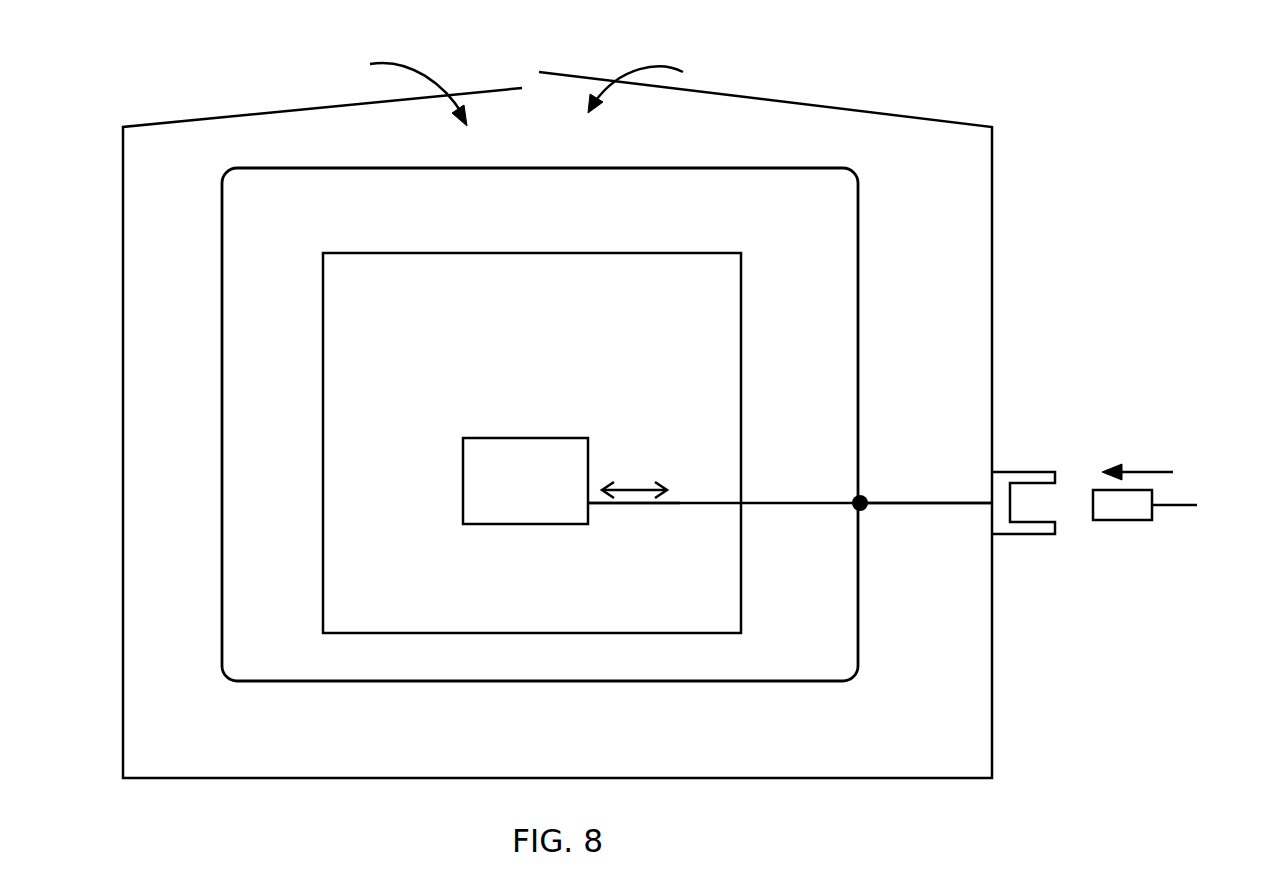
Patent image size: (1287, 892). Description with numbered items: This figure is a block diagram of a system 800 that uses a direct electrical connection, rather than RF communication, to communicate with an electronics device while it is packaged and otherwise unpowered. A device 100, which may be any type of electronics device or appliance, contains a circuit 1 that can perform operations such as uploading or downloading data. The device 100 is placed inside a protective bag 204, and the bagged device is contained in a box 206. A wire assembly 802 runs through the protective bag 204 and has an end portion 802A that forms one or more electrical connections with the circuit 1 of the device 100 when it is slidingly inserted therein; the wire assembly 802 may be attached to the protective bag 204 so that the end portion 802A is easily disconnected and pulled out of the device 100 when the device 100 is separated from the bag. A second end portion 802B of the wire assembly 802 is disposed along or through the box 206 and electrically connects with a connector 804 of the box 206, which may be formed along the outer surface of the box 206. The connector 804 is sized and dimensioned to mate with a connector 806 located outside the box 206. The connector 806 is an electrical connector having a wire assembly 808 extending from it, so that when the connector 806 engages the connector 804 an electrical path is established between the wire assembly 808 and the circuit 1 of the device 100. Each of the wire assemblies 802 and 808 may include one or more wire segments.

The system 800 is at (1127, 99).
The box 206 is at (962, 768).
The protective bag 204 is at (818, 240).
The device 100 is at (362, 322).
The circuit 1 is at (463, 458).
The wire assembly 802 is at (757, 505).
The end portion 802A is at (603, 505).
The second end portion 802B is at (975, 502).
The connector 804 is at (1028, 535).
The connector 806 is at (1123, 522).
The wire assembly 808 is at (1180, 503).